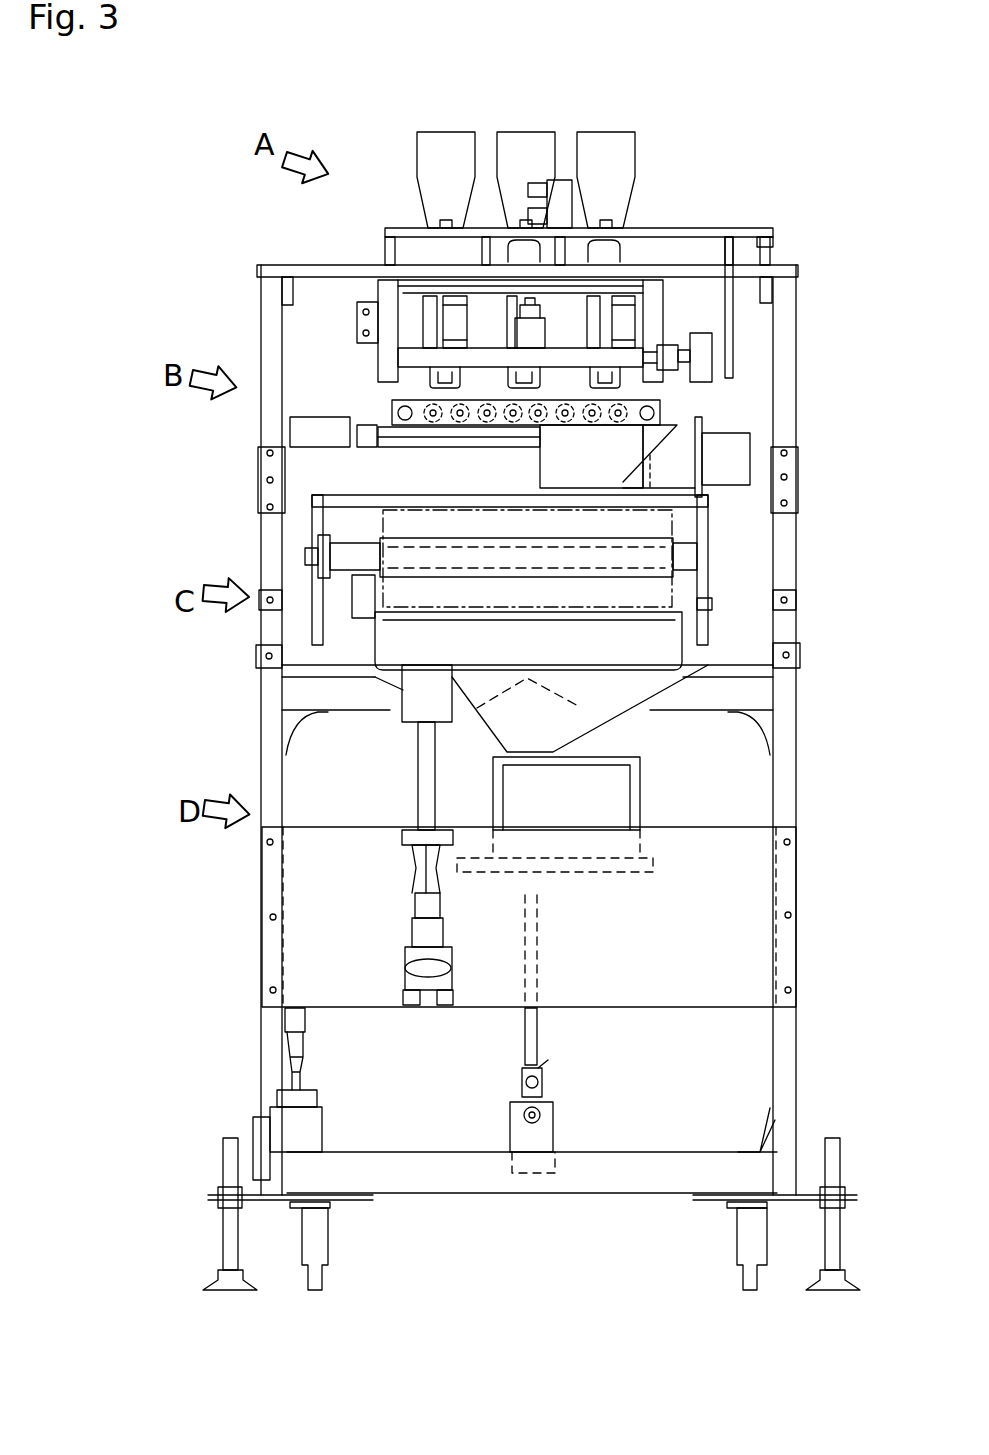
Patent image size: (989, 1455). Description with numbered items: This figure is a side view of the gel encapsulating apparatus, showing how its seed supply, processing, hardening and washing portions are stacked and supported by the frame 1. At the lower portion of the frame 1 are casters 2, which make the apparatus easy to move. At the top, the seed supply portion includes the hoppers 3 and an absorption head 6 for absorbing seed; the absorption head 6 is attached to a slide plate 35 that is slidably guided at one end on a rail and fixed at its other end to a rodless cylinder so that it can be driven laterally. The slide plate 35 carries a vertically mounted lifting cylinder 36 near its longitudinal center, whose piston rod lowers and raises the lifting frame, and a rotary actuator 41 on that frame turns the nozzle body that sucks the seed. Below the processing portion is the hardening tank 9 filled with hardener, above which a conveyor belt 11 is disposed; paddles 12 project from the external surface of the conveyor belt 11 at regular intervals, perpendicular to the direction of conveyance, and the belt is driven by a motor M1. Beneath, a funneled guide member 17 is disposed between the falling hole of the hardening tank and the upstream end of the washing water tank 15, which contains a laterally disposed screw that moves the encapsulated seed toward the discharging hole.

The frame 1 is at (797, 775).
The casters 2 is at (322, 1280).
The hoppers 3 is at (588, 131).
The absorption head 6 is at (339, 362).
The hardening tank 9 is at (378, 622).
The conveyor belt 11 is at (700, 528).
The paddles 12 is at (385, 512).
The washing water tank 15 is at (638, 793).
The funneled guide member 17 is at (623, 707).
The slide plate 35 is at (748, 228).
The lifting cylinder 36 is at (572, 199).
The rotary actuator 41 is at (705, 378).
The motor M1 is at (547, 472).